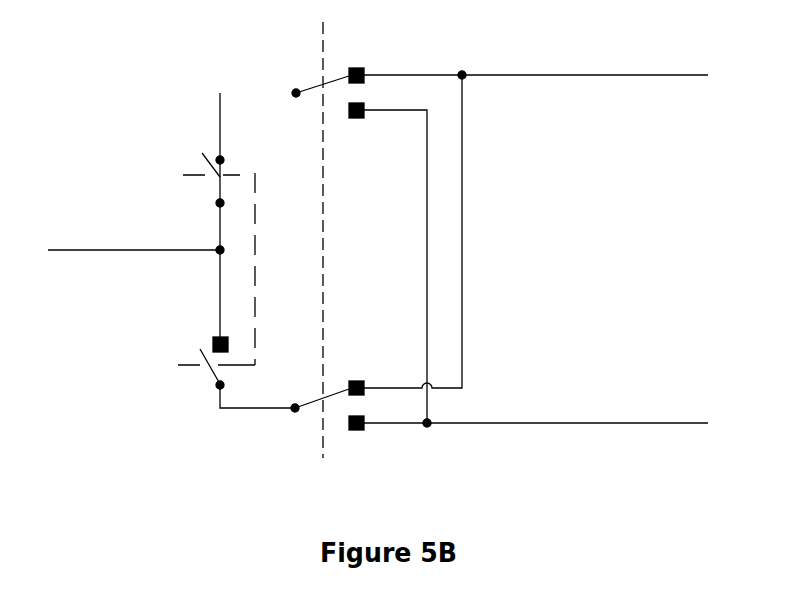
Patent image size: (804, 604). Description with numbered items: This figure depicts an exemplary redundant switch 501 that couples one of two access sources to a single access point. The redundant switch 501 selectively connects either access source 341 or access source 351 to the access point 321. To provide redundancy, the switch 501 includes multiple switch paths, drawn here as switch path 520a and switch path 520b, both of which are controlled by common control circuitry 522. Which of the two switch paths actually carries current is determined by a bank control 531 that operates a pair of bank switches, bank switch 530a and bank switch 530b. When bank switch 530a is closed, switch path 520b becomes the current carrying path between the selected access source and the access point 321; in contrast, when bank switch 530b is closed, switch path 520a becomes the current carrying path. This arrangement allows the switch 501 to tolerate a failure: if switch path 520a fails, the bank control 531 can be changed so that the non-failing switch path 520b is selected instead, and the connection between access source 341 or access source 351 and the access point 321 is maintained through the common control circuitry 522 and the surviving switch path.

The redundant switch 501 is at (658, 228).
The access source 341 is at (618, 50).
The access source 351 is at (617, 397).
The access point 321 is at (128, 213).
The bank control 531 is at (118, 342).
The common control circuitry 522 is at (515, 468).
The switch path 520a is at (308, 88).
The switch path 520b is at (307, 410).
The bank switch 530a is at (212, 377).
The bank switch 530b is at (202, 153).